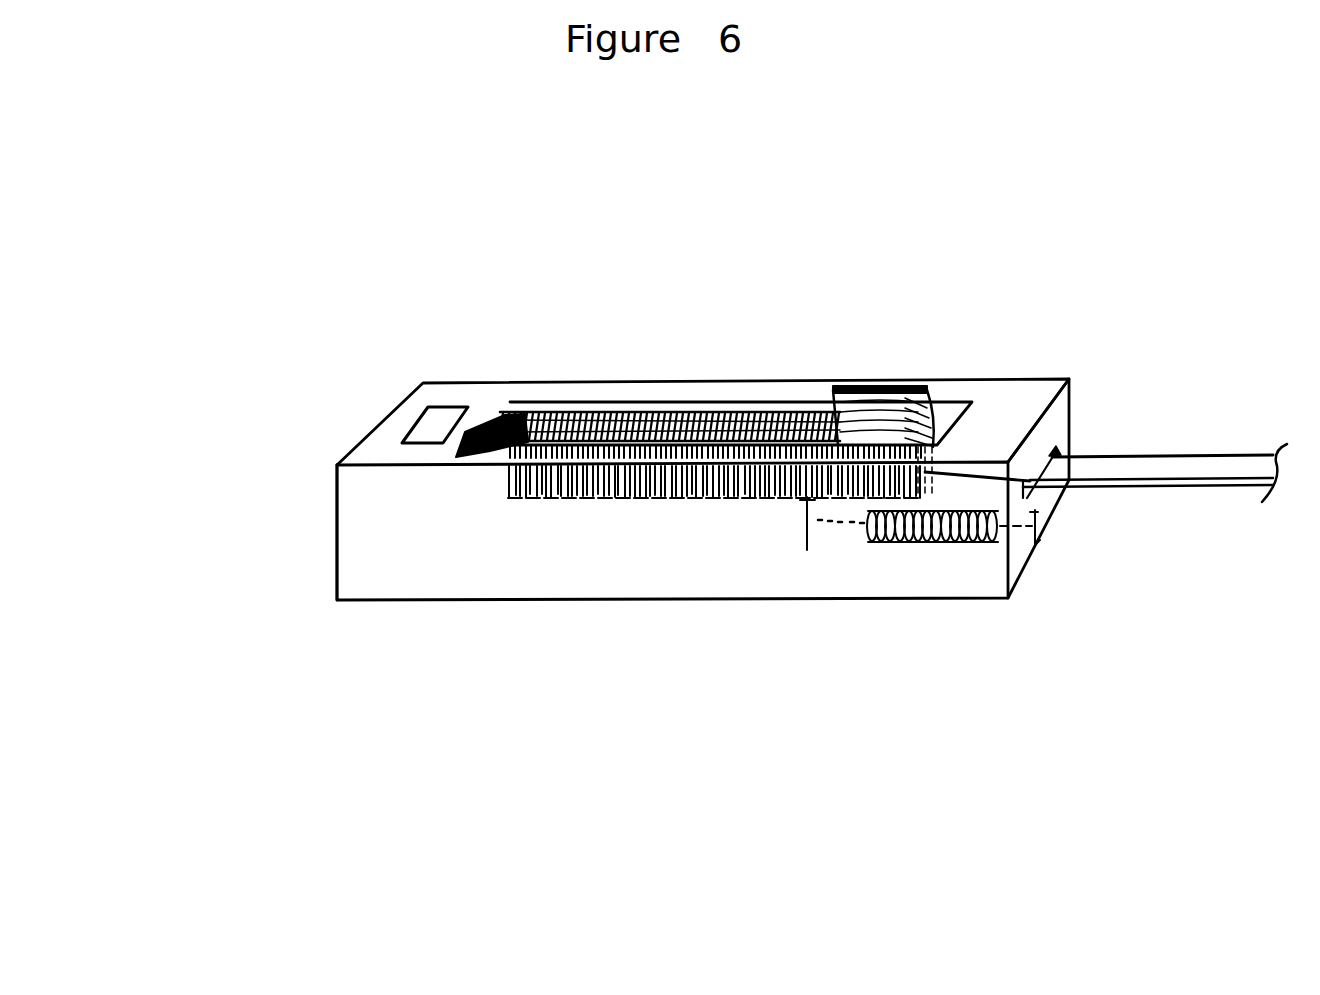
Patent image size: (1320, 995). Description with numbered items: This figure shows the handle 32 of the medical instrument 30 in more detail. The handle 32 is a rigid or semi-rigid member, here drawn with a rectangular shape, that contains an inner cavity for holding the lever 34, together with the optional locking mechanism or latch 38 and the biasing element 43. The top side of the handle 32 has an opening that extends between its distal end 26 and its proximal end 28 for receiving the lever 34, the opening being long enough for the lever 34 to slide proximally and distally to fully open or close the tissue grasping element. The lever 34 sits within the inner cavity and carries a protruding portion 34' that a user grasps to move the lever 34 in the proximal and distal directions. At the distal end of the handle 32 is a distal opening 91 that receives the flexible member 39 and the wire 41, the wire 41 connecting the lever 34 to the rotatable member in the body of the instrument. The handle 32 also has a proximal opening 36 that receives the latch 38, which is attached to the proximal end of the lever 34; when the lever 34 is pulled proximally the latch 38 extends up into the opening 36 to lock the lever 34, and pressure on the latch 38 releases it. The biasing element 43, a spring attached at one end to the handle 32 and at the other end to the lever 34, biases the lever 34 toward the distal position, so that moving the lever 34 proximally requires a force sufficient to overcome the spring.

The medical instrument 30 is at (225, 235).
The proximal end 28 is at (370, 675).
The distal end 26 is at (975, 665).
The handle 32 is at (337, 533).
The proximal opening 36 is at (410, 423).
The lever 34 is at (735, 407).
The latch 38 is at (478, 427).
The protruding portion 34' is at (908, 400).
The flexible member 39 is at (1197, 455).
The wire 41 is at (1128, 477).
The distal opening 91 is at (1053, 452).
The biasing element 43 is at (923, 543).